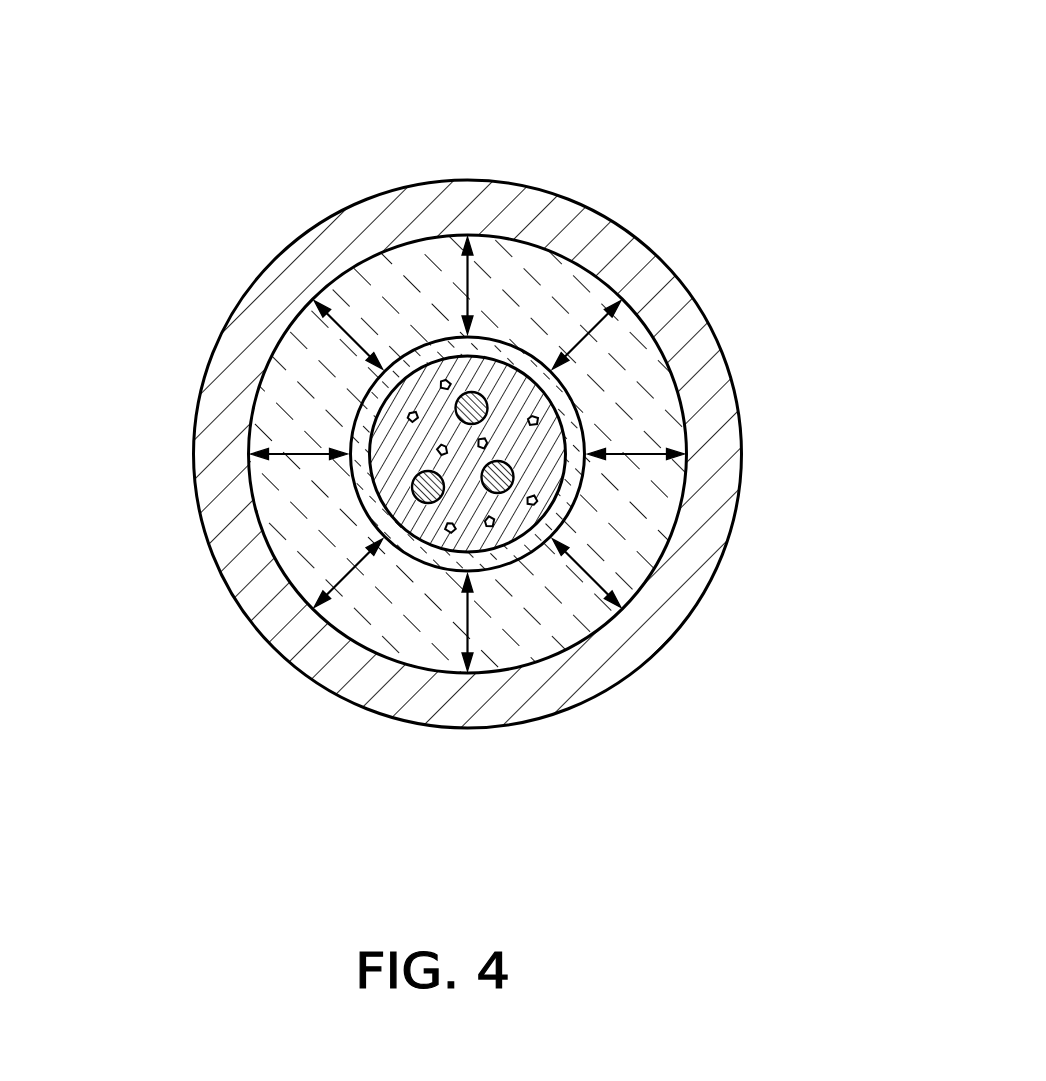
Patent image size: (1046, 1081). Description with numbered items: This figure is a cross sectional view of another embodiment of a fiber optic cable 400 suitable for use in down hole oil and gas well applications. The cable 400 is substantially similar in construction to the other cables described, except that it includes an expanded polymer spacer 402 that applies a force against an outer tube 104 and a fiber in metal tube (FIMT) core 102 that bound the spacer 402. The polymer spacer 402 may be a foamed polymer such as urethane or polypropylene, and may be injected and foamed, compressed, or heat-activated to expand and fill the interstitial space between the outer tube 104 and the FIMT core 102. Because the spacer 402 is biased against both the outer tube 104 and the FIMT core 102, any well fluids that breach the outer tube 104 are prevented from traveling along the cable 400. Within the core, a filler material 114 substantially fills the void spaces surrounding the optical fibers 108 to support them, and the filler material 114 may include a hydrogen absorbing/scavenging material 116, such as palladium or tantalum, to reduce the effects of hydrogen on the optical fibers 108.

The fiber optic cable 400 is at (338, 213).
The expanded polymer spacer 402 is at (510, 280).
The outer tube 104 is at (632, 258).
The fiber in metal tube (FIMT) core 102 is at (573, 422).
The filler material 114 is at (400, 457).
The optical fibers 108 is at (425, 500).
The hydrogen absorbing/scavenging material 116 is at (490, 524).